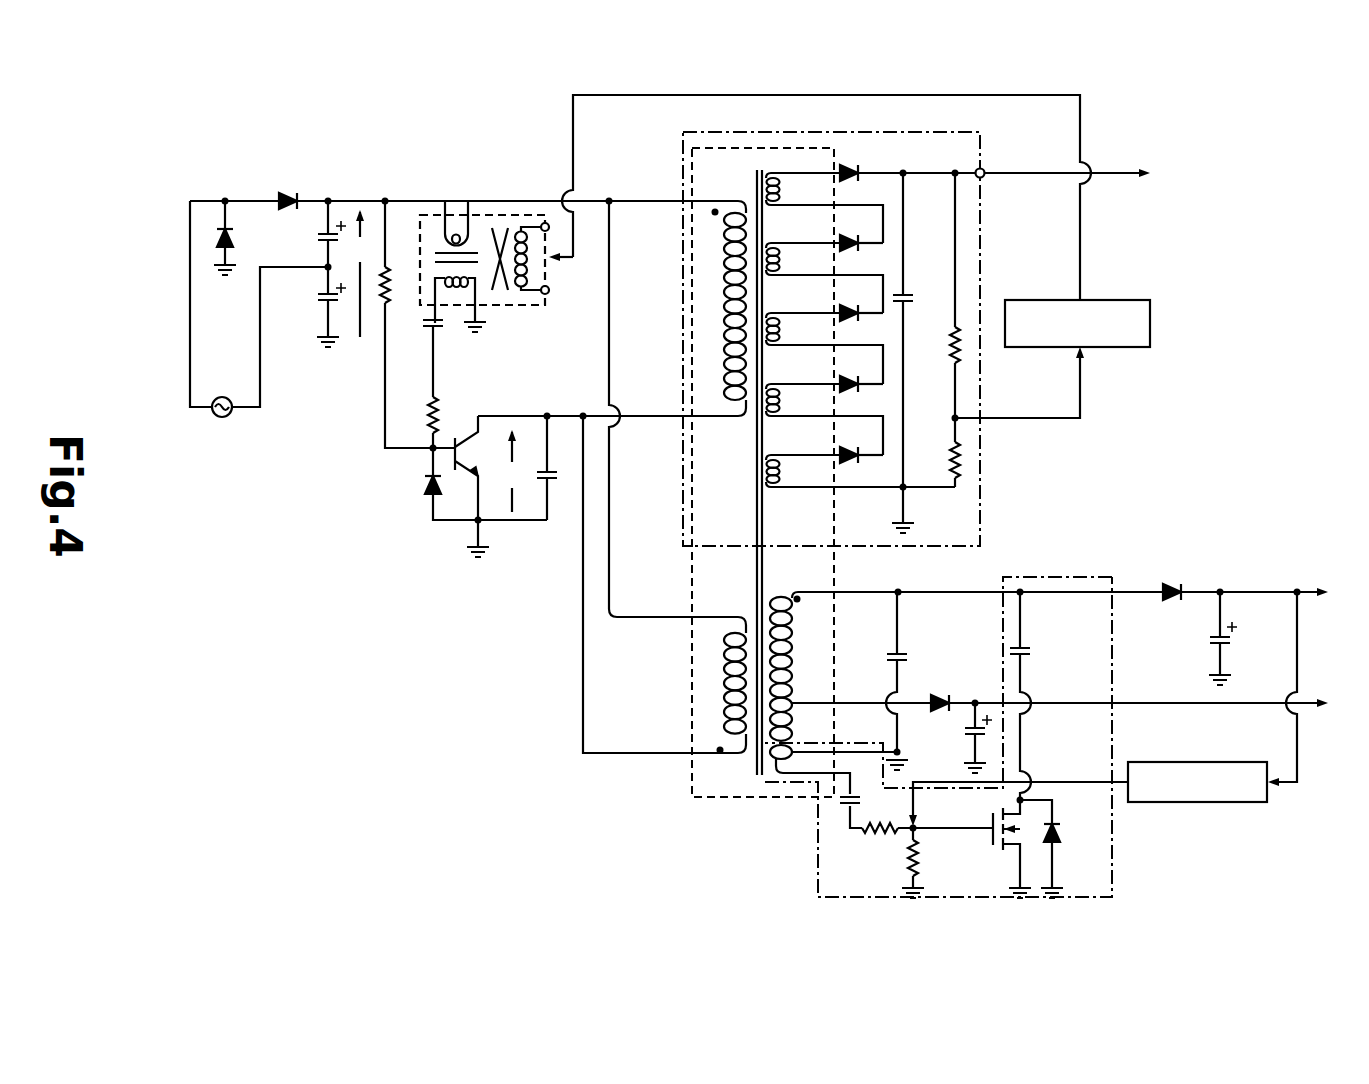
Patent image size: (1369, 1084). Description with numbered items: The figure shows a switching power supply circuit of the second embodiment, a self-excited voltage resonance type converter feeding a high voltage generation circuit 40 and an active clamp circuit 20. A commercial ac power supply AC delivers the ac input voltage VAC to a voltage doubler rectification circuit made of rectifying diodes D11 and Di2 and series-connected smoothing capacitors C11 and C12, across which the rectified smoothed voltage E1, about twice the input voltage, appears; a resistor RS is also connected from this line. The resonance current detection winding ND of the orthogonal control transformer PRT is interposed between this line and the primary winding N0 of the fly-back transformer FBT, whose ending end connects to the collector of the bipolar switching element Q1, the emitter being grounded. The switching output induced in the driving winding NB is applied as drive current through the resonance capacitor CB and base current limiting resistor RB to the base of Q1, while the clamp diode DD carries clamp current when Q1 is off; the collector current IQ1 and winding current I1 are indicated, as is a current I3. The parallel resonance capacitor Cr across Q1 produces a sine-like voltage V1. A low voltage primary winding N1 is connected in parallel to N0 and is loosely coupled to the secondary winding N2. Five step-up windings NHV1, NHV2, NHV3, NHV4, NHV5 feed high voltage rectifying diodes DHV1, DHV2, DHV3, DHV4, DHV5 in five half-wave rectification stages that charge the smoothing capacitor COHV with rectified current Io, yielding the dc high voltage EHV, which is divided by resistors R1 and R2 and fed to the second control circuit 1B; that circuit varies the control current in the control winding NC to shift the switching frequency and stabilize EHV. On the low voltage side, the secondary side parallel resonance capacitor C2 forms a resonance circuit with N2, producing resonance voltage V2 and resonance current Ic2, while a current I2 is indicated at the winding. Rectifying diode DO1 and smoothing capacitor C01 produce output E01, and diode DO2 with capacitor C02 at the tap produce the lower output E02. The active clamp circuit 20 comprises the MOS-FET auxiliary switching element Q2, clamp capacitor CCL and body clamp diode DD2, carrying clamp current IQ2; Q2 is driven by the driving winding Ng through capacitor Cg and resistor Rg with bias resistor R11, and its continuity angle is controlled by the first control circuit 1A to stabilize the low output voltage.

The high voltage generation circuit 40 is at (738, 131).
The first control circuit 1A is at (1118, 347).
The second control circuit 1B is at (1173, 762).
The active clamp circuit 20 is at (1112, 835).
The commercial ac power supply AC is at (238, 416).
The ac input voltage VAC is at (255, 382).
The rectifying diode D11 is at (239, 238).
The rectifying diode Di2 is at (281, 191).
The smoothing capacitor C11 is at (311, 234).
The smoothing capacitor C12 is at (311, 307).
The rectified smoothed voltage E1 is at (358, 273).
The starting resistor RS is at (406, 324).
The orthogonal control transformer PRT is at (482, 242).
The resonance current detection winding ND is at (458, 209).
The driving winding NB is at (457, 300).
The control winding NC is at (538, 262).
The resonance capacitor CB is at (420, 356).
The base current limiting resistor RB is at (416, 422).
The clamp diode DD is at (472, 484).
The switching element Q1 is at (461, 486).
The voltage across parallel resonance capacitor V1 is at (516, 471).
The parallel resonance capacitor Cr is at (555, 468).
The collector current IQ1 is at (552, 408).
The winding current I1 is at (620, 458).
The winding current I3 is at (653, 193).
The fly-back transformer FBT is at (763, 491).
The primary winding N0 is at (712, 278).
The low voltage primary winding N1 is at (703, 648).
The secondary winding N2 is at (820, 618).
The step-up winding NHV1 is at (824, 208).
The step-up winding NHV2 is at (824, 278).
The step-up winding NHV3 is at (824, 348).
The step-up winding NHV4 is at (824, 419).
The step-up winding NHV5 is at (860, 473).
The high voltage rectifying diode DHV1 is at (994, 187).
The high voltage rectifying diode DHV2 is at (860, 257).
The high voltage rectifying diode DHV3 is at (860, 327).
The high voltage rectifying diode DHV4 is at (860, 398).
The high voltage rectifying diode DHV5 is at (860, 446).
The rectified current Io is at (876, 505).
The smoothing capacitor COHV is at (922, 352).
The resistor R1 is at (937, 306).
The resistor R2 is at (937, 464).
The dc high voltage EHV is at (1173, 174).
The driving winding Ng is at (800, 762).
The capacitor Cg is at (864, 811).
The resistor Rg is at (927, 840).
The bias resistor R11 is at (929, 863).
The auxiliary switching element Q2 is at (995, 848).
The clamp diode DD2 is at (1060, 849).
The clamp capacitor CCL is at (1034, 695).
The clamp current IQ2 is at (1032, 600).
The secondary current I2 is at (888, 582).
The secondary side parallel resonance capacitor C2 is at (887, 672).
The secondary side parallel resonance voltage V2 is at (912, 608).
The resonance current Ic2 is at (907, 718).
The rectifying diode DO2 is at (1129, 691).
The smoothing capacitor C02 is at (960, 738).
The rectifying diode DO1 is at (1242, 582).
The smoothing capacitor C01 is at (1243, 637).
The secondary side dc output voltage E01 is at (1349, 594).
The secondary side dc output voltage E02 is at (1349, 705).